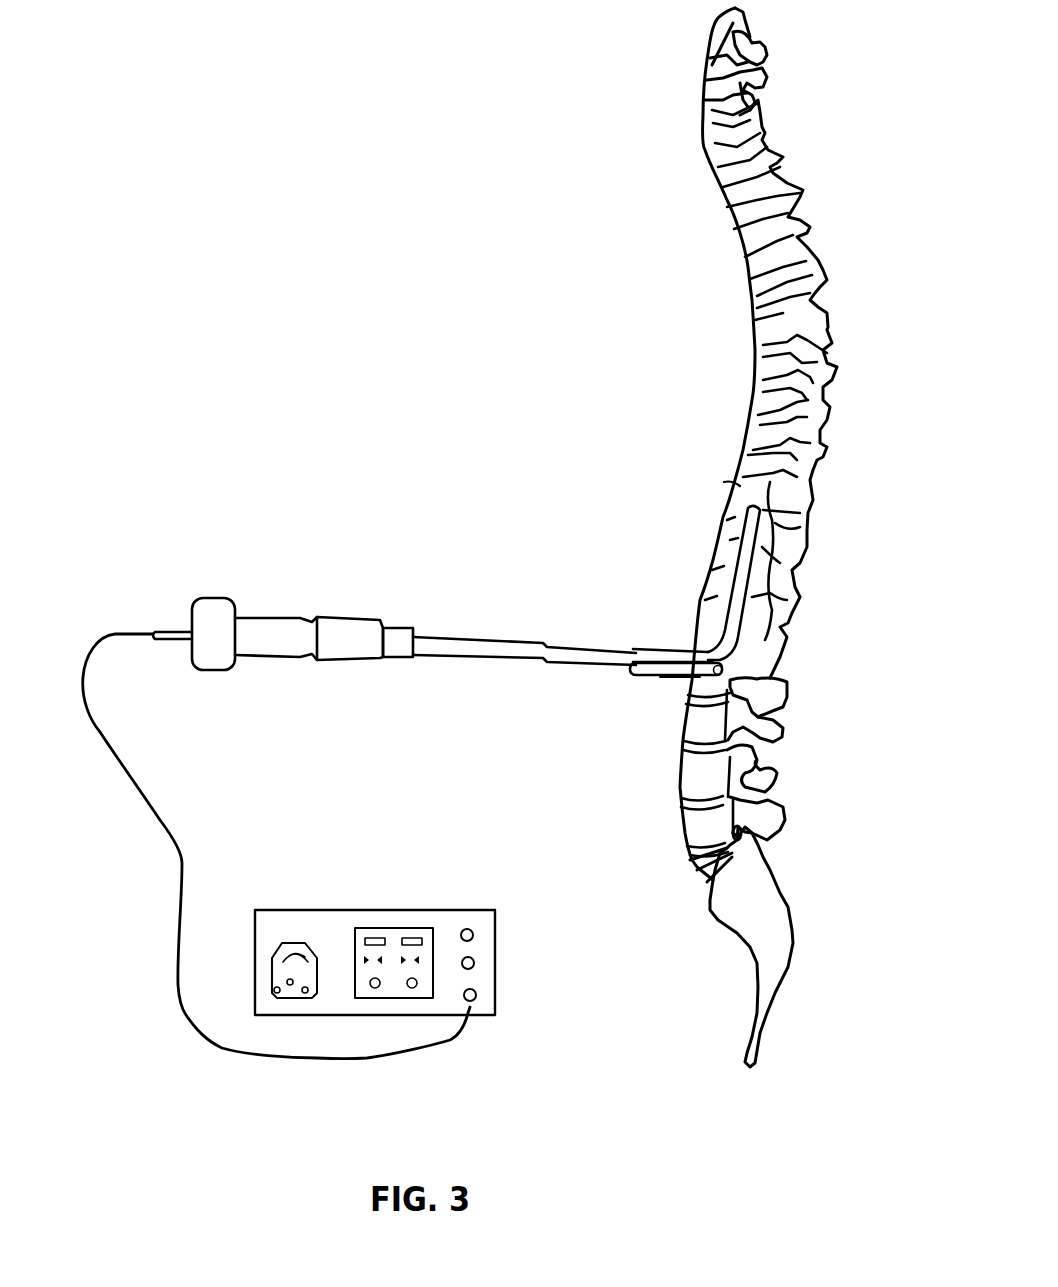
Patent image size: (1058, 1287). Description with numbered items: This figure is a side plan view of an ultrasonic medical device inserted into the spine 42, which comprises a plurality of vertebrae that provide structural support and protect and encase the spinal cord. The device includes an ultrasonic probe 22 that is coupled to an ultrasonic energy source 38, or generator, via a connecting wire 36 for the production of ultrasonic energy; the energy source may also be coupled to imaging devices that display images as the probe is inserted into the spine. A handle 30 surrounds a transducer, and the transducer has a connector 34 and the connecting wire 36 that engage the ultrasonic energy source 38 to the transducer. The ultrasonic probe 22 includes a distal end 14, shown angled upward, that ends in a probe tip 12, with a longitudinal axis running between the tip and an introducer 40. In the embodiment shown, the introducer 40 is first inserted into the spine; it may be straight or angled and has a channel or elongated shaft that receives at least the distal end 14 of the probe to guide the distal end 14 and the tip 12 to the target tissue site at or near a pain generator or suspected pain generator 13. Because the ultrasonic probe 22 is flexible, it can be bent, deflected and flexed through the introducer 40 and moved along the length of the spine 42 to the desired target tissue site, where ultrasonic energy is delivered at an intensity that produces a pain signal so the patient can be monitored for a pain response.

The spine 42 is at (777, 368).
The pain generator or suspected pain generator 13 is at (728, 487).
The probe tip 12 is at (727, 503).
The distal end 14 is at (720, 540).
The ultrasonic probe 22 is at (430, 637).
The handle 30 is at (275, 618).
The connector 34 is at (172, 630).
The connecting wire 36 is at (177, 992).
The ultrasonic energy source 38 is at (352, 910).
The introducer 40 is at (678, 677).